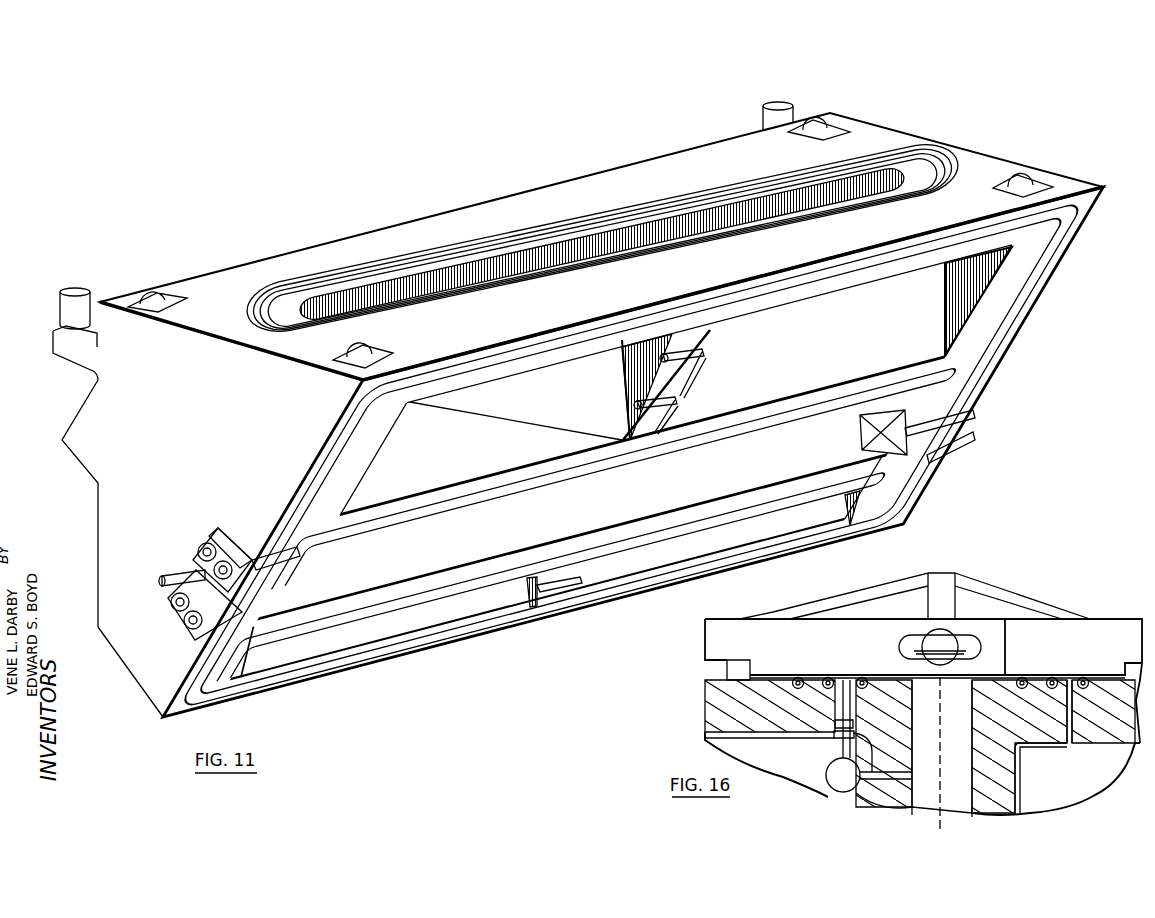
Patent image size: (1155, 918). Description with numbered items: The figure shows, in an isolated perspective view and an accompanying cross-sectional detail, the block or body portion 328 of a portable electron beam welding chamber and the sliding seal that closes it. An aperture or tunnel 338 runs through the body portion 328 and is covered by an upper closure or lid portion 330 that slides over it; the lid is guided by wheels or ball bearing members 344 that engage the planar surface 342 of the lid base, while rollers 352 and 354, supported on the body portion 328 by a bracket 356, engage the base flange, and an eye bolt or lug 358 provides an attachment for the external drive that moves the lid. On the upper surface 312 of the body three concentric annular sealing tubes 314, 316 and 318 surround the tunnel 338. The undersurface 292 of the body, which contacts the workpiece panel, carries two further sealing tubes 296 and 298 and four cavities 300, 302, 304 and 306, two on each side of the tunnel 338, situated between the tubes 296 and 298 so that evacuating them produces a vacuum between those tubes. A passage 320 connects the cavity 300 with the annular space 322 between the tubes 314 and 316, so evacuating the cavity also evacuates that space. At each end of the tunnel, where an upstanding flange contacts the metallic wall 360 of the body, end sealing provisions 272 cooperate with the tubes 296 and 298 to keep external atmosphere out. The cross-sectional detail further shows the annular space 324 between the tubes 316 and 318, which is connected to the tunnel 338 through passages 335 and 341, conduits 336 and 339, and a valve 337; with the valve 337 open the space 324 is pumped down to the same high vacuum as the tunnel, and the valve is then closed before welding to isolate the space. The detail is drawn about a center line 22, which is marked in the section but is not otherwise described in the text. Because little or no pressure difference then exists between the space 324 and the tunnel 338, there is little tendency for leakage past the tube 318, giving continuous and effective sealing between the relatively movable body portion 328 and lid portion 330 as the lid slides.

In FIG. 16, the center axis 22 is at (940, 753).
In FIG. 11, the end seal 272 is at (227, 530).
In FIG. 11, the undersurface 292 is at (1005, 302).
In FIG. 11, the sealing tube 296 is at (440, 500).
In FIG. 11, the sealing tube 298 is at (503, 360).
In FIG. 11, the cavity 300 is at (380, 487).
In FIG. 16, the cavity 300 is at (1058, 793).
In FIG. 11, the cavity 302 is at (762, 397).
In FIG. 11, the cavity 304 is at (443, 617).
In FIG. 11, the cavity 306 is at (697, 550).
In FIG. 11, the upper surface 312 is at (224, 276).
In FIG. 11, the sealing tube 314 is at (283, 290).
In FIG. 16, the sealing tube 314 is at (810, 698).
In FIG. 11, the sealing tube 316 is at (332, 282).
In FIG. 16, the sealing tube 316 is at (841, 721).
In FIG. 11, the sealing tube 318 is at (422, 268).
In FIG. 16, the sealing tube 318 is at (862, 677).
In FIG. 16, the passage 320 is at (1058, 748).
In FIG. 16, the space 322 is at (812, 677).
In FIG. 16, the space 324 is at (843, 676).
In FIG. 11, the body portion 328 is at (105, 458).
In FIG. 16, the body portion 328 is at (722, 698).
In FIG. 16, the lid portion 330 is at (1093, 617).
In FIG. 16, the passage 335 is at (896, 710).
In FIG. 16, the conduit 336 is at (840, 757).
In FIG. 16, the valve 337 is at (827, 783).
In FIG. 11, the tunnel 338 is at (580, 246).
In FIG. 16, the tunnel 338 is at (955, 687).
In FIG. 16, the conduit 339 is at (860, 790).
In FIG. 16, the passage 341 is at (887, 771).
In FIG. 16, the planar surface 342 is at (1107, 677).
In FIG. 11, the ball bearing members 344 is at (150, 295).
In FIG. 16, the ball bearing members 344 is at (738, 668).
In FIG. 11, the roller 352 is at (72, 310).
In FIG. 11, the roller 354 is at (782, 108).
In FIG. 11, the bracket 356 is at (70, 350).
In FIG. 16, the eye bolt 358 is at (967, 640).
In FIG. 11, the metallic wall 360 is at (160, 685).